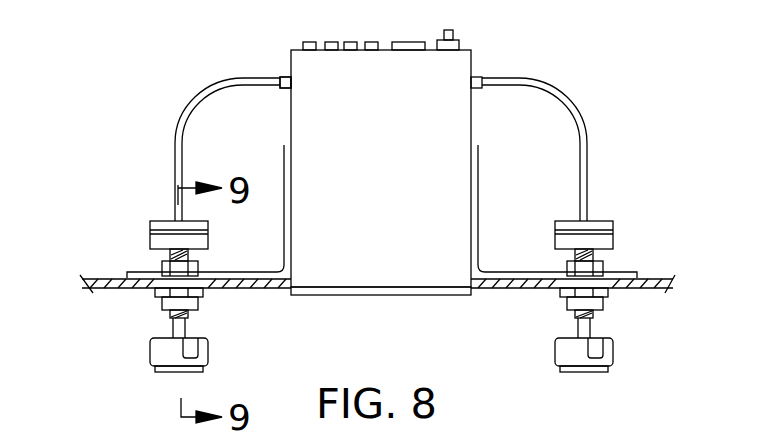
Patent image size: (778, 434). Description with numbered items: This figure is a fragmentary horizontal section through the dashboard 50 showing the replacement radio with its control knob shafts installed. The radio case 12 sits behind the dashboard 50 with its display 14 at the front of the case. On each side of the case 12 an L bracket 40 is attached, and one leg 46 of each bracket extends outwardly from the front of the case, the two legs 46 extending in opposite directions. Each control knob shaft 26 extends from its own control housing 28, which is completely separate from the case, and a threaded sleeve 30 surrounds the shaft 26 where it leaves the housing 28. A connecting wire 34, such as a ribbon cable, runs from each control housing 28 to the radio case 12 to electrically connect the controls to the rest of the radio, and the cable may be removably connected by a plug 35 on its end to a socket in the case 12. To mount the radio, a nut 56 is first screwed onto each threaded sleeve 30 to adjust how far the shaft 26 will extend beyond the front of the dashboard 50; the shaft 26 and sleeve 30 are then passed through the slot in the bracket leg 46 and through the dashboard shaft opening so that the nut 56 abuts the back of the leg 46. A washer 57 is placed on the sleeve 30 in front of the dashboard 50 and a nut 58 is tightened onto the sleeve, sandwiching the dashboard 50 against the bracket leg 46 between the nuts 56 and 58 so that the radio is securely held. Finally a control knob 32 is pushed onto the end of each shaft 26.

The case 12 is at (305, 64).
The display 14 is at (420, 296).
The control knob shaft 26 is at (178, 327).
The control housing 28 is at (160, 222).
The threaded sleeve 30 is at (603, 258).
The control knob 32 is at (155, 354).
The connecting wire 34 is at (178, 132).
The plug 35 is at (283, 90).
The L bracket 40 is at (478, 202).
The bracket leg 46 is at (137, 272).
The dashboard 50 is at (118, 285).
The nut 56 is at (567, 268).
The washer 57 is at (607, 291).
The nut 58 is at (565, 298).